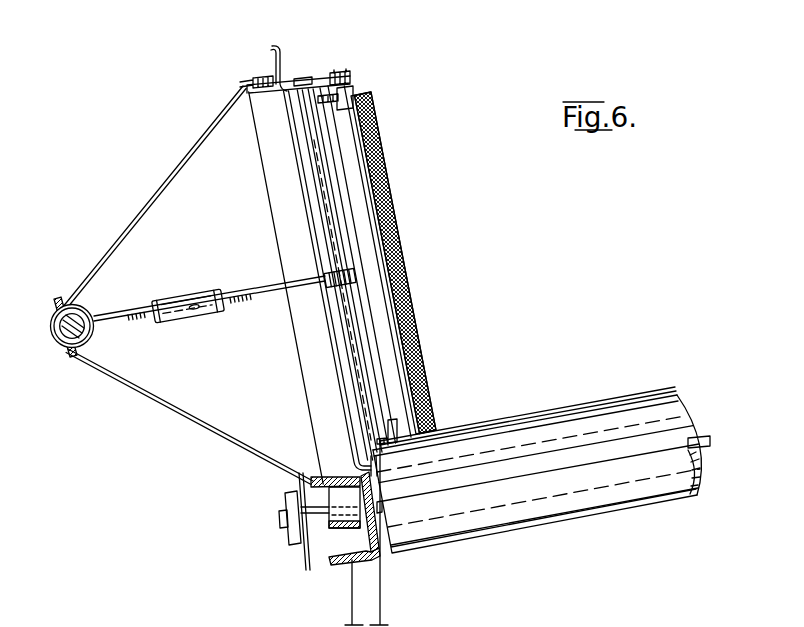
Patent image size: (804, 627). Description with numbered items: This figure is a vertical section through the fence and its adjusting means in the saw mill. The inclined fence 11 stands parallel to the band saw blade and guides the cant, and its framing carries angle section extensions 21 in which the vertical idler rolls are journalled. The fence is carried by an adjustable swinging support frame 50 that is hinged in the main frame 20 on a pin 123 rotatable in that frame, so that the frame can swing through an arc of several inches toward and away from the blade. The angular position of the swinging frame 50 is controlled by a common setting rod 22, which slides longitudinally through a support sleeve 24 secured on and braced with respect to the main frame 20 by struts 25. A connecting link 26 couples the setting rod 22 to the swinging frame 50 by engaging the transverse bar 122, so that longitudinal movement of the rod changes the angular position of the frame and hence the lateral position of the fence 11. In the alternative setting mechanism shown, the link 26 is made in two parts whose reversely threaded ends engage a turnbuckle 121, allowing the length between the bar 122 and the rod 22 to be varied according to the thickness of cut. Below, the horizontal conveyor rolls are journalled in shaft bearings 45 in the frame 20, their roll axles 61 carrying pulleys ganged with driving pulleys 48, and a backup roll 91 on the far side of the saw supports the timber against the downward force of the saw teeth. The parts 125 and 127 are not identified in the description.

The fence 11 is at (381, 158).
The main frame 20 is at (338, 560).
The angle section extensions 21 is at (345, 100).
The setting rod 22 is at (90, 310).
The support sleeves 24 is at (94, 332).
The struts 25 is at (138, 226).
The connecting link 26 is at (268, 286).
The shaft bearings 45 is at (335, 503).
The driving pulleys 48 is at (299, 557).
The swinging support frames 50 is at (281, 222).
The roll axles 61 is at (281, 520).
The backup roll 91 is at (576, 422).
The turnbuckle 121 is at (170, 294).
The transverse bar 122 is at (316, 184).
The pins 123 is at (258, 79).
The fastener block 125 is at (337, 76).
The hook 127 is at (277, 57).